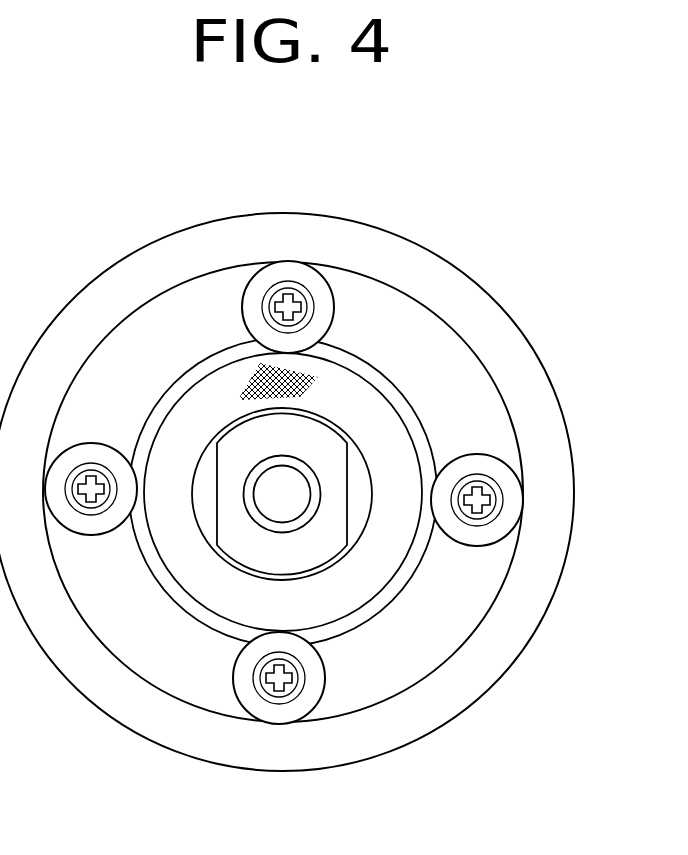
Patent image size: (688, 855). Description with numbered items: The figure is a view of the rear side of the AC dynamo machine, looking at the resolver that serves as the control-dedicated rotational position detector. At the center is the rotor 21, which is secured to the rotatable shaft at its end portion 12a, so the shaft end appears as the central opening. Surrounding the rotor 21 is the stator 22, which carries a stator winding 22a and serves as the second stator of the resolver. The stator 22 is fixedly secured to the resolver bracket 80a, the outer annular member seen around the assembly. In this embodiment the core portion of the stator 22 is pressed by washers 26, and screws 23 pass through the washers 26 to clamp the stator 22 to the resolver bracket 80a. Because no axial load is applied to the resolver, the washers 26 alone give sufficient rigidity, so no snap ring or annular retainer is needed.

The resolver bracket 80a is at (440, 290).
The stator 22 is at (352, 627).
The stator winding 22a is at (363, 568).
The rotor 21 is at (252, 443).
The end portion 12a is at (278, 505).
The washer 26 is at (283, 275).
The screw 23 is at (303, 293).